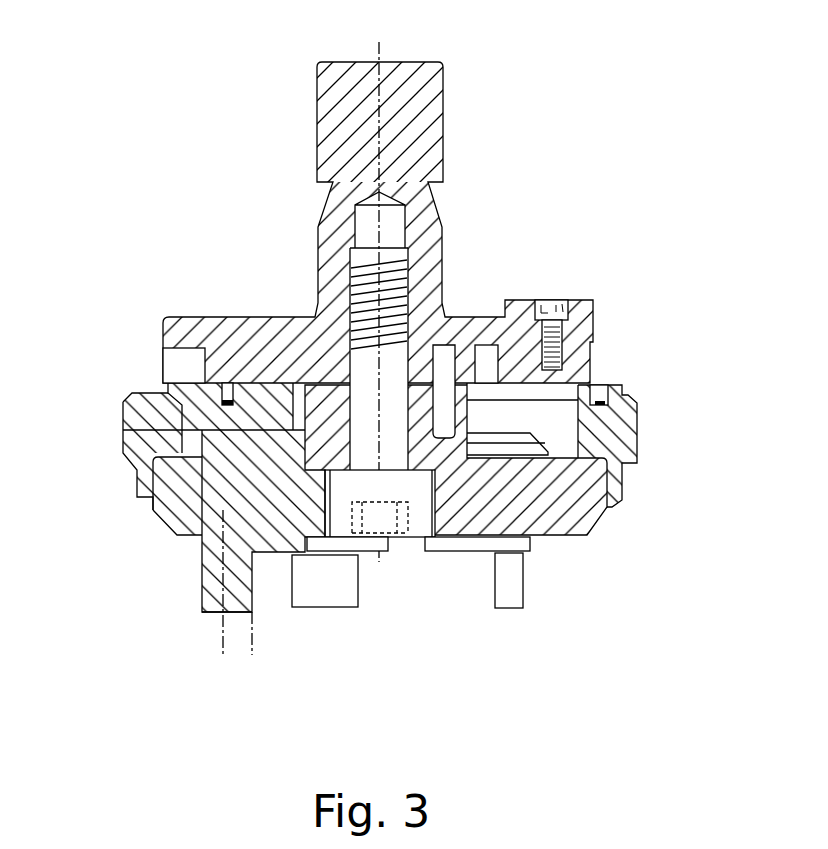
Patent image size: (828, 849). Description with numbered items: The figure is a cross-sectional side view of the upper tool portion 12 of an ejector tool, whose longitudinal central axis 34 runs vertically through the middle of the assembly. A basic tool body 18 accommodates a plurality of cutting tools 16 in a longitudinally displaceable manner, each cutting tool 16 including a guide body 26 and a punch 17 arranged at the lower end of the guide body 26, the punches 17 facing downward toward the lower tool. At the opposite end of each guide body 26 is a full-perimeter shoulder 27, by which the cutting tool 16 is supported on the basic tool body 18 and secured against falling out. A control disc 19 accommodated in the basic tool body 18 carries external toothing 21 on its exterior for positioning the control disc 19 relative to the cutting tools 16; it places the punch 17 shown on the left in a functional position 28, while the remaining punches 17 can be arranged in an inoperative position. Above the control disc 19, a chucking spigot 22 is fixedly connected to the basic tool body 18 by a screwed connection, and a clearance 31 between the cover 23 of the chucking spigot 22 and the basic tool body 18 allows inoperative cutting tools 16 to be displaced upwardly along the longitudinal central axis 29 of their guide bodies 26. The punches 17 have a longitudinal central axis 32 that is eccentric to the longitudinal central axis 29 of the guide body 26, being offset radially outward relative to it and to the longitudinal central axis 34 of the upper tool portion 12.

The upper tool portion 12 is at (550, 198).
The cutting tool 16 is at (189, 630).
The punch 17 is at (204, 588).
The basic tool body 18 is at (174, 552).
The control disc 19 is at (208, 415).
The external toothing 21 is at (638, 420).
The chucking spigot 22 is at (443, 118).
The cover 23 is at (228, 333).
The guide body 26 is at (222, 478).
The full-perimeter shoulder 27 is at (195, 446).
The functional position 28 is at (222, 690).
The longitudinal central axis 29 is at (253, 643).
The clearance 31 is at (560, 422).
The longitudinal central axis 32 is at (220, 642).
The longitudinal central axis 34 is at (380, 42).